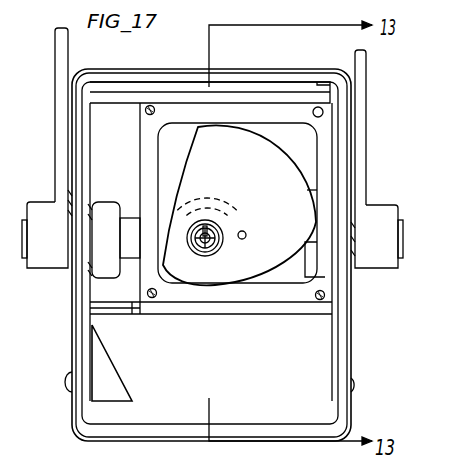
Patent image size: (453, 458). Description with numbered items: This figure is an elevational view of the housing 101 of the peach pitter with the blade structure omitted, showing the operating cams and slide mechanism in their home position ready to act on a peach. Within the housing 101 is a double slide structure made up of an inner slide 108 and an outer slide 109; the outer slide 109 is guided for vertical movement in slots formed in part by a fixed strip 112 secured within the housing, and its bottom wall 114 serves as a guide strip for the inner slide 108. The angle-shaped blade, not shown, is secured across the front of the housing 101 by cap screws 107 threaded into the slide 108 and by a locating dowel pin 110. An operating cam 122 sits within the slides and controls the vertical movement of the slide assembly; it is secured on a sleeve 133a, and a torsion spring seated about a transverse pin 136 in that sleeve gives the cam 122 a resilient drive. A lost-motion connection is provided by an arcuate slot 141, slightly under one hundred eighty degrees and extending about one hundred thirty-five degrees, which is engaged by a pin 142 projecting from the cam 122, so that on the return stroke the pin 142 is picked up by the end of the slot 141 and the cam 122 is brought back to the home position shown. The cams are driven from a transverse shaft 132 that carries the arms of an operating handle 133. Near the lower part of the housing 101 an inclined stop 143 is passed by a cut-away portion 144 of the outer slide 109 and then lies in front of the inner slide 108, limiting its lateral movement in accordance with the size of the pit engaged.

The housing 101 is at (320, 70).
The cap screws 107 is at (146, 112).
The inner slide 108 is at (140, 155).
The outer slide 109 is at (230, 317).
The locating dowel pin 110 is at (323, 112).
The fixed strip 112 is at (85, 289).
The bottom wall 114 is at (255, 308).
The operating cam 122 is at (241, 171).
The transverse shaft 132 is at (403, 233).
The operating handle 133 is at (55, 45).
The sleeve 133a is at (221, 248).
The transverse pin 136 is at (219, 231).
The arcuate slot 141 is at (210, 196).
The pin 142 is at (246, 236).
The inclined stop 143 is at (118, 390).
The cut-away portion 144 is at (109, 308).